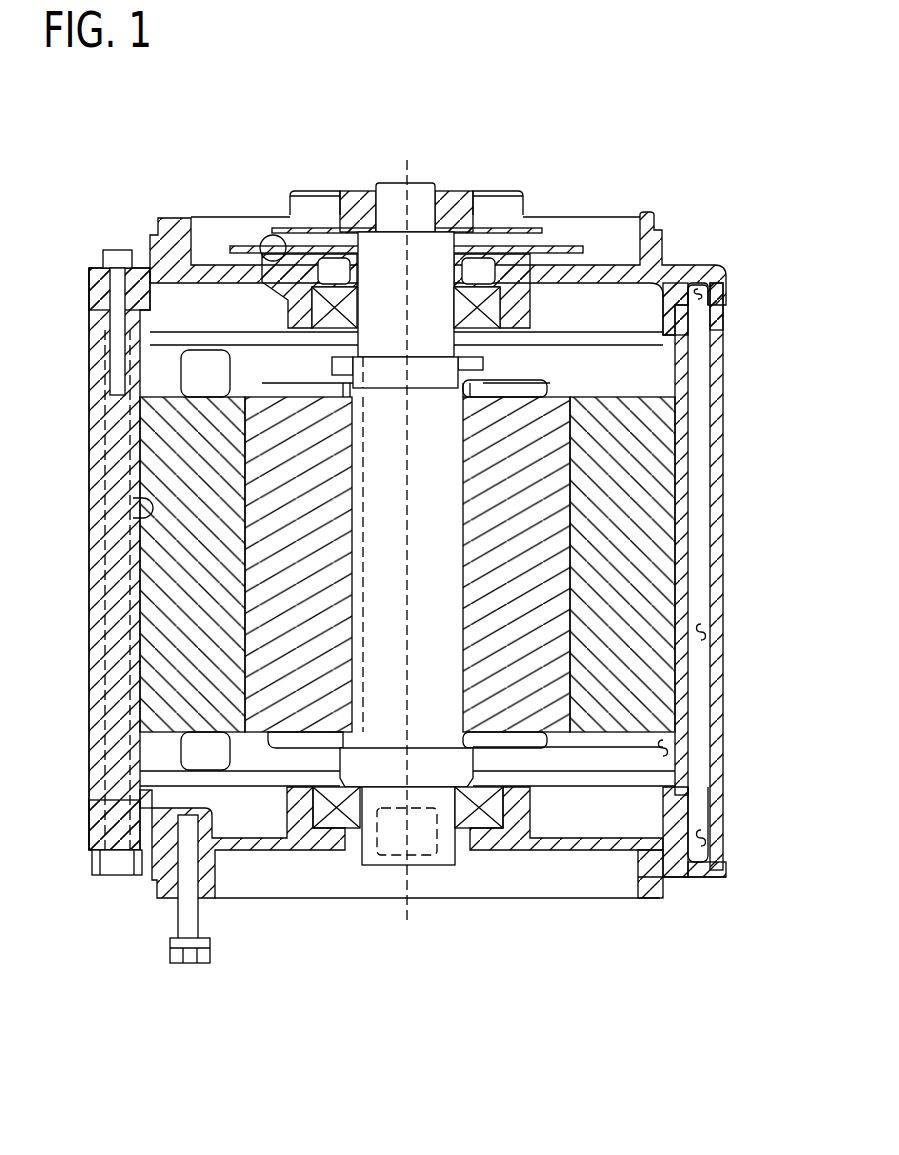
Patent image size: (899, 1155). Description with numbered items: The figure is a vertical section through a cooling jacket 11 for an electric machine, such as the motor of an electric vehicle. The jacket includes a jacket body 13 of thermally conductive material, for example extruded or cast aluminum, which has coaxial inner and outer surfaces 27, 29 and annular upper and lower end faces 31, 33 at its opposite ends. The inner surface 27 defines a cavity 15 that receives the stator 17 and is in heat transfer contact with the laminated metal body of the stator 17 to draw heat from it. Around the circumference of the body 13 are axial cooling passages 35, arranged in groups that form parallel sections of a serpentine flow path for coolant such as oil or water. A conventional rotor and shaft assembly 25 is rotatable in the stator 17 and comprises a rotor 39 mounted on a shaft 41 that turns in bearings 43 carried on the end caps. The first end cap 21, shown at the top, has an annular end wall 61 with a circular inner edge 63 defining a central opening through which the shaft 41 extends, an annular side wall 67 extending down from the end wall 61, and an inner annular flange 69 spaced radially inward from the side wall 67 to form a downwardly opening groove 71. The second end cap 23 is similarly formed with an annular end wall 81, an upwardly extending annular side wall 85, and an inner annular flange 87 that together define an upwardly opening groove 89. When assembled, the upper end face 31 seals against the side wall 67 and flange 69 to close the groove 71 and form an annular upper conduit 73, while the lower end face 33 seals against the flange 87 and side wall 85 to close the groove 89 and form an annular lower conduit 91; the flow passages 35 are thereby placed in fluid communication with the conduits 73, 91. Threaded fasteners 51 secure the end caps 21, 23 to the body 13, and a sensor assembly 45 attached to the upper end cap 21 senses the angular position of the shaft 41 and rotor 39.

The cooling jacket 11 is at (86, 364).
The jacket body 13 is at (86, 440).
The cavity 15 is at (666, 748).
The stator 17 is at (652, 488).
The first end cap 21 is at (648, 208).
The second end cap 23 is at (156, 910).
The rotor and shaft assembly 25 is at (288, 752).
The inner surface 27 is at (138, 508).
The outer surface 29 is at (727, 537).
The upper end face 31 is at (93, 267).
The lower end face 33 is at (92, 853).
The cooling passages 35 is at (708, 633).
The rotor 39 is at (262, 667).
The shaft 41 is at (390, 848).
The bearings 43 is at (312, 300).
The sensor assembly 45 is at (482, 188).
The threaded fasteners 51 is at (120, 250).
The annular end wall 61 is at (597, 265).
The circular inner edge 63 is at (350, 254).
The annular side wall 67 is at (704, 296).
The inner annular flange 69 is at (681, 297).
The groove 71 is at (716, 278).
The upper conduit 73 is at (706, 301).
The annular end wall 81 is at (572, 840).
The annular side wall 85 is at (724, 820).
The inner annular flange 87 is at (665, 858).
The groove 89 is at (703, 870).
The lower conduit 91 is at (703, 838).